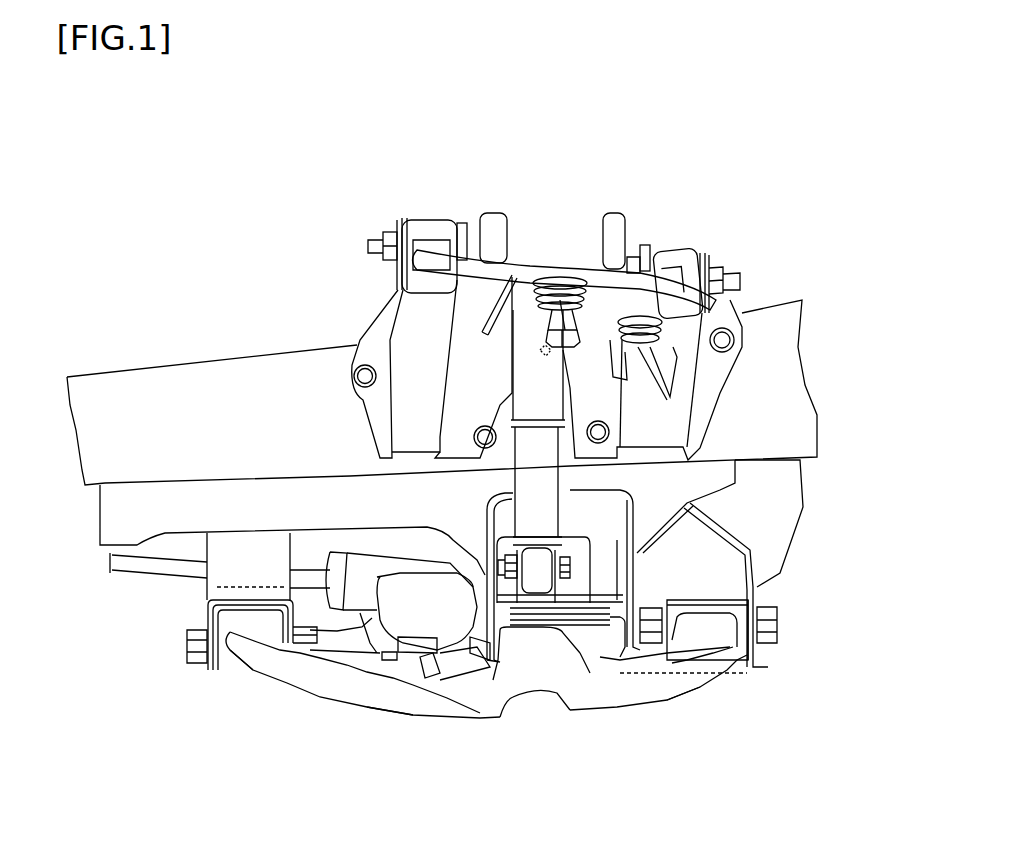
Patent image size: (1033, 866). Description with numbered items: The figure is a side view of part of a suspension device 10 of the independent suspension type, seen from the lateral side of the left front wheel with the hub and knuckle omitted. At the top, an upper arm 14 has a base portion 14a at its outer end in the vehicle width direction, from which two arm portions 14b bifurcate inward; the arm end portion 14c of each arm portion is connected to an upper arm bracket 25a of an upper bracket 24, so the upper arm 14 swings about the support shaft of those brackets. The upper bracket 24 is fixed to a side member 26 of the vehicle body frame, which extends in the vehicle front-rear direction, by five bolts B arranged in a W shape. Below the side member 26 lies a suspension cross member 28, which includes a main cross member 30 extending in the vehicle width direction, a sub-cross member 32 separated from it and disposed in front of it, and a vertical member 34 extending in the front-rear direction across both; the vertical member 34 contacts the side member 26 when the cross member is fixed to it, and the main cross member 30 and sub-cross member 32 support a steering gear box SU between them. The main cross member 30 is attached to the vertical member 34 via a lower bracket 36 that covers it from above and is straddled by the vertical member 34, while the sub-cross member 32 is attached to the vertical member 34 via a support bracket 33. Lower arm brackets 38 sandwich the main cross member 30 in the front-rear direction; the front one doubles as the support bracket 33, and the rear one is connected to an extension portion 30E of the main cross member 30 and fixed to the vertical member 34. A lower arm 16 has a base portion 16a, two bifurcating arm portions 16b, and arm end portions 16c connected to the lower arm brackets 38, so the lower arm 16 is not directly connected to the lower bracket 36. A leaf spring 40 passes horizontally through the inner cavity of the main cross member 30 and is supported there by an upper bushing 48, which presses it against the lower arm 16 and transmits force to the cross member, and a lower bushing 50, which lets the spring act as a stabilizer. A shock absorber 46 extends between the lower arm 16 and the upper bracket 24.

The suspension device 10 is at (640, 157).
The upper arm 14 is at (517, 252).
The base portion of the upper arm 14a is at (562, 265).
The arm portions of the upper arm 14b is at (464, 245).
The arm end portions of the upper arm 14c is at (428, 225).
The lower arm 16 is at (482, 712).
The base portion of the lower arm 16a is at (565, 702).
The arm portions of the lower arm 16b is at (400, 707).
The arm end portions of the lower arm 16c is at (236, 668).
The upper bracket 24 is at (372, 295).
The upper arm brackets 25a is at (393, 228).
The side member 26 is at (170, 377).
The suspension cross member 28 is at (275, 717).
The main cross member 30 is at (620, 652).
The extension portion of the main cross member 30E is at (633, 668).
The sub-cross member 32 is at (207, 593).
The support bracket 33 is at (242, 555).
The vertical member 34 is at (137, 530).
The lower bracket 36 is at (655, 570).
The lower arm brackets 38 is at (760, 664).
The leaf spring 40 is at (596, 662).
The shock absorber 46 is at (518, 480).
The upper bushing 48 is at (590, 600).
The lower bushing 50 is at (585, 668).
The bolts B is at (357, 383).
The steering gear box SU is at (398, 664).